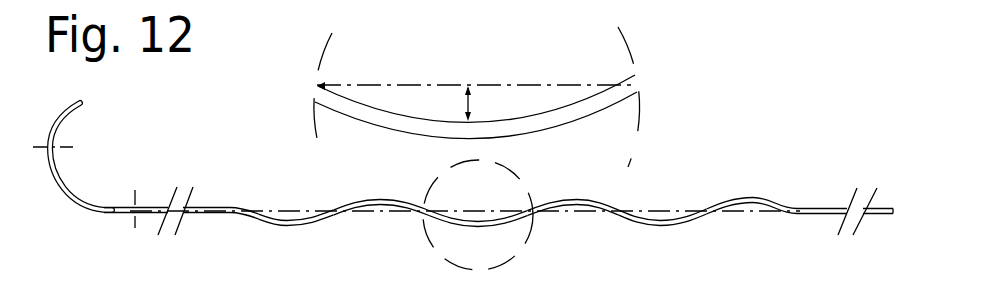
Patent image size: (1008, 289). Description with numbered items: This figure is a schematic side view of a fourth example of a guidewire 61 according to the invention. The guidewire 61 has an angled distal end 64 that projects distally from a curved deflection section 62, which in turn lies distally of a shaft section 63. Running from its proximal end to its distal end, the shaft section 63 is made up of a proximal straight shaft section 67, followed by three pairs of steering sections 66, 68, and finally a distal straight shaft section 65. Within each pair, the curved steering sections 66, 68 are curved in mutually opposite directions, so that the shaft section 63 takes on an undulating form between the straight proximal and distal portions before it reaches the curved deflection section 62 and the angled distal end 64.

The guidewire 61 is at (668, 172).
The curved deflection section 62 is at (86, 203).
The shaft section 63 is at (146, 212).
The angled distal end 64 is at (63, 108).
The distal straight shaft section 65 is at (206, 203).
The steering section 66 is at (269, 225).
The proximal straight shaft section 67 is at (830, 208).
The steering section 68 is at (380, 198).